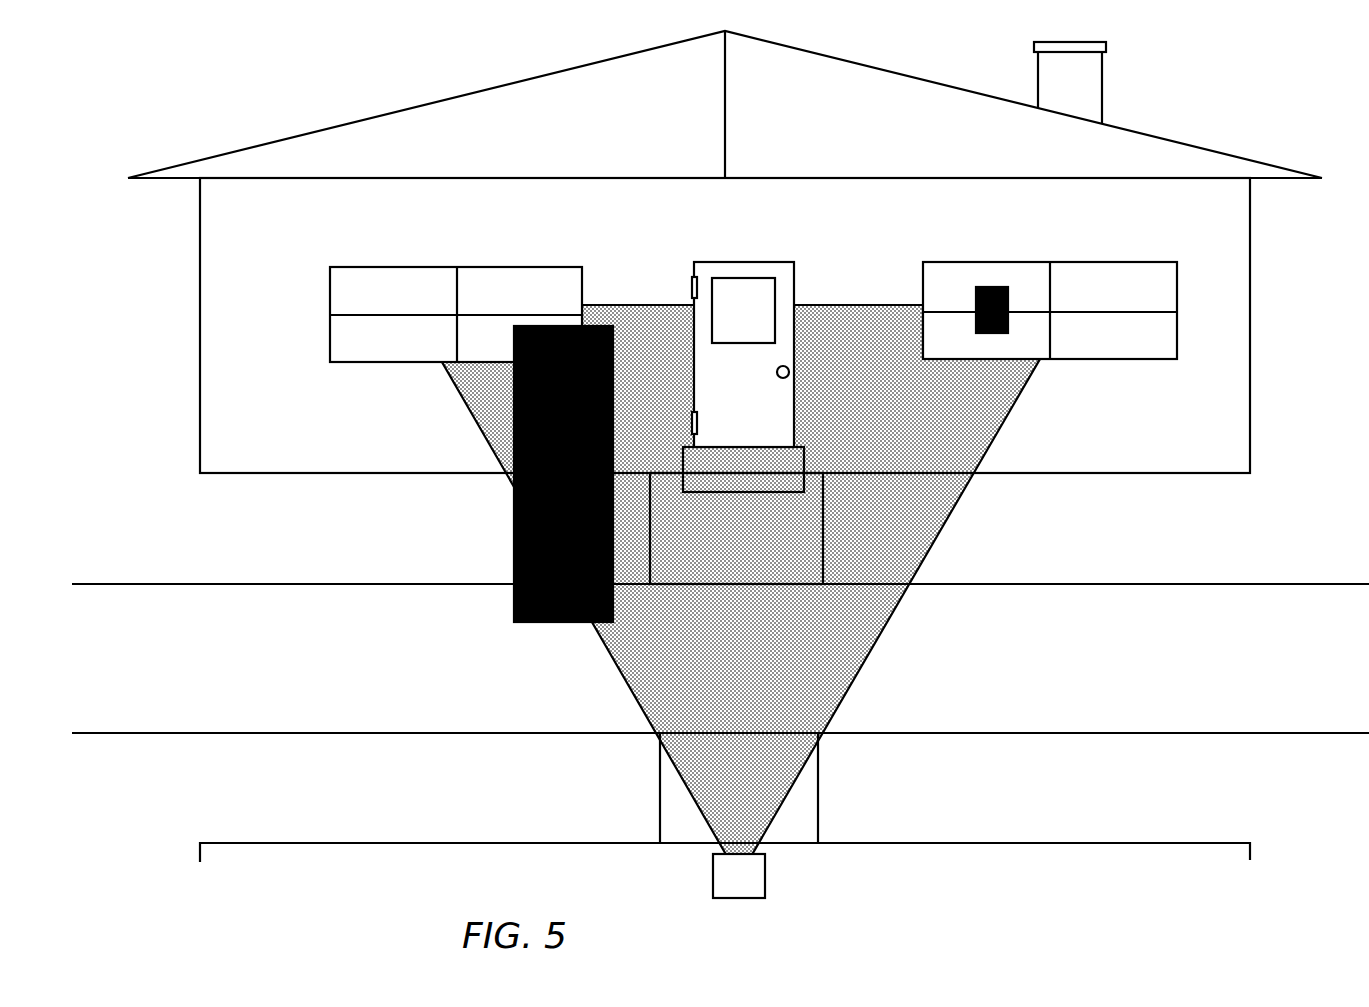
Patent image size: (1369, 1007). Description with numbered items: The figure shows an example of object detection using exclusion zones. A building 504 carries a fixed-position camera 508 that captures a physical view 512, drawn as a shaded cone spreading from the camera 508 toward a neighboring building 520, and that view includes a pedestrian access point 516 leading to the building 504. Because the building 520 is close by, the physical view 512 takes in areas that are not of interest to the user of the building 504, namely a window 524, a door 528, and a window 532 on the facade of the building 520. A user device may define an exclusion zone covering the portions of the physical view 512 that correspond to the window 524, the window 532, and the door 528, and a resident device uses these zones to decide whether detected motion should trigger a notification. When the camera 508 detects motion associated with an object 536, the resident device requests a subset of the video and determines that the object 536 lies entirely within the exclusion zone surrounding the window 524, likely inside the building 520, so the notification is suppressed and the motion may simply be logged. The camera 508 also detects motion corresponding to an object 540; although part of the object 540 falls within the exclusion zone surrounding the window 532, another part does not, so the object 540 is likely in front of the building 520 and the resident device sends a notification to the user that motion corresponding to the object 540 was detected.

The building 504 is at (1105, 843).
The fixed-position camera 508 is at (765, 880).
The physical view 512 is at (890, 617).
The pedestrian access point 516 is at (803, 840).
The building 520 is at (1250, 330).
The window 524 is at (1177, 283).
The door 528 is at (738, 262).
The window 532 is at (495, 263).
The object 536 is at (1008, 291).
The object 540 is at (513, 497).